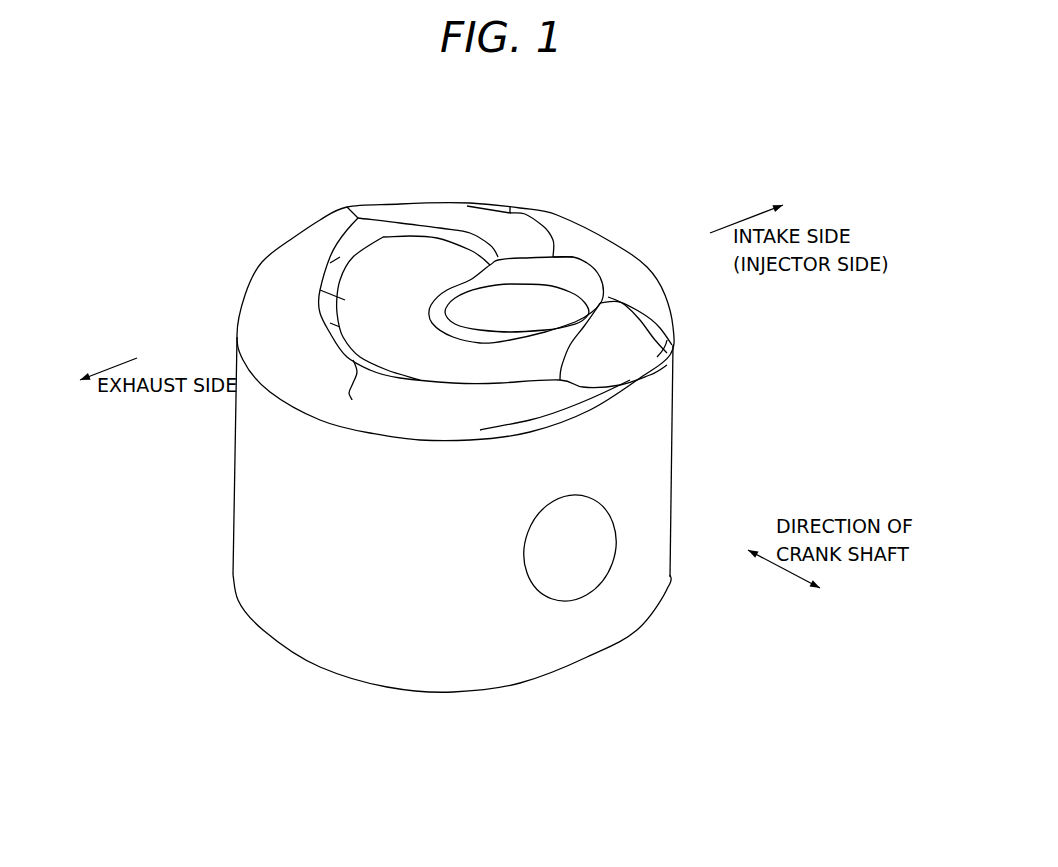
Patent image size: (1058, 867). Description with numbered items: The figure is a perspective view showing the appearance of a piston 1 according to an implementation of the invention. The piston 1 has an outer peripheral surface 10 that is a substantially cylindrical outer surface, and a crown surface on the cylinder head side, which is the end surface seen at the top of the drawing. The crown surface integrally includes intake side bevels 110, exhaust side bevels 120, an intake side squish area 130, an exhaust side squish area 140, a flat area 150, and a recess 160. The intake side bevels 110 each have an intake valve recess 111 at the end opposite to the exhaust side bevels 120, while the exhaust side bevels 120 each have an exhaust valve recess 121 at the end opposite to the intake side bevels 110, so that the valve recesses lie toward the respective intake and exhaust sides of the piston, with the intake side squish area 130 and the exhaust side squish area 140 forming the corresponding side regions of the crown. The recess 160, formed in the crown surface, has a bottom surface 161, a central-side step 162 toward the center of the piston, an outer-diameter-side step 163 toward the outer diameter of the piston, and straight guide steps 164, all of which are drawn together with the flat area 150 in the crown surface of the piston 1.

The piston 1 is at (265, 188).
The outer peripheral surface 10 is at (238, 520).
The intake side bevels 110 is at (543, 333).
The intake valve recess 111 is at (643, 320).
The exhaust side bevels 120 is at (422, 403).
The exhaust valve recess 121 is at (355, 382).
The intake side squish area 130 is at (598, 248).
The exhaust side squish area 140 is at (290, 380).
The flat area 150 is at (388, 318).
The recess 160 is at (563, 268).
The bottom surface 161 is at (494, 318).
The central-side step 162 is at (455, 337).
The outer-diameter-side step 163 is at (598, 280).
The straight guide steps 164 is at (592, 343).